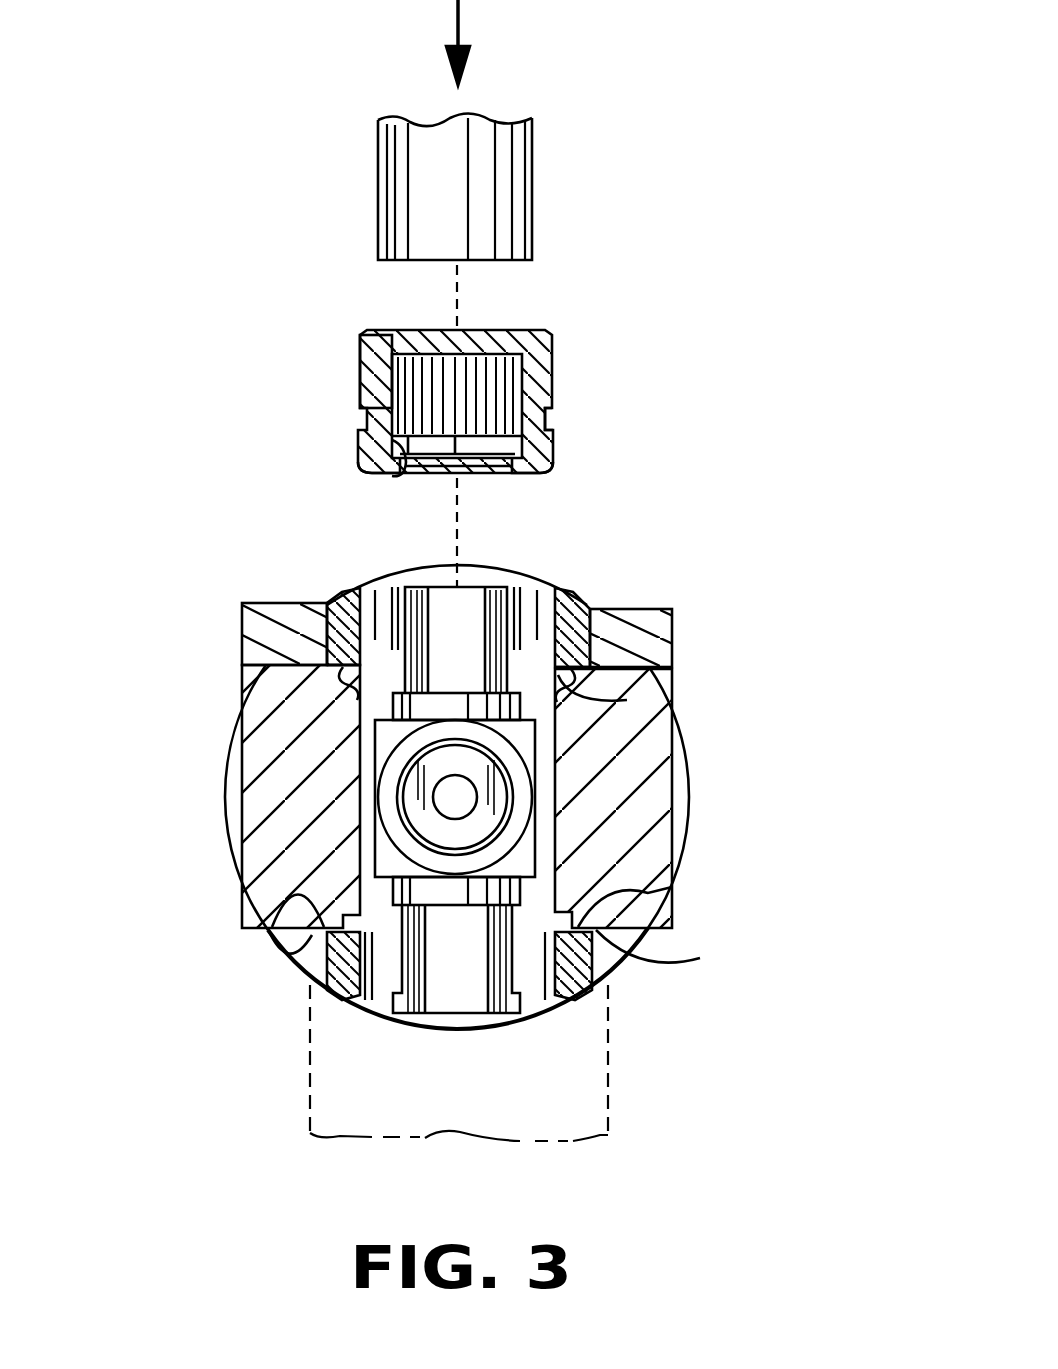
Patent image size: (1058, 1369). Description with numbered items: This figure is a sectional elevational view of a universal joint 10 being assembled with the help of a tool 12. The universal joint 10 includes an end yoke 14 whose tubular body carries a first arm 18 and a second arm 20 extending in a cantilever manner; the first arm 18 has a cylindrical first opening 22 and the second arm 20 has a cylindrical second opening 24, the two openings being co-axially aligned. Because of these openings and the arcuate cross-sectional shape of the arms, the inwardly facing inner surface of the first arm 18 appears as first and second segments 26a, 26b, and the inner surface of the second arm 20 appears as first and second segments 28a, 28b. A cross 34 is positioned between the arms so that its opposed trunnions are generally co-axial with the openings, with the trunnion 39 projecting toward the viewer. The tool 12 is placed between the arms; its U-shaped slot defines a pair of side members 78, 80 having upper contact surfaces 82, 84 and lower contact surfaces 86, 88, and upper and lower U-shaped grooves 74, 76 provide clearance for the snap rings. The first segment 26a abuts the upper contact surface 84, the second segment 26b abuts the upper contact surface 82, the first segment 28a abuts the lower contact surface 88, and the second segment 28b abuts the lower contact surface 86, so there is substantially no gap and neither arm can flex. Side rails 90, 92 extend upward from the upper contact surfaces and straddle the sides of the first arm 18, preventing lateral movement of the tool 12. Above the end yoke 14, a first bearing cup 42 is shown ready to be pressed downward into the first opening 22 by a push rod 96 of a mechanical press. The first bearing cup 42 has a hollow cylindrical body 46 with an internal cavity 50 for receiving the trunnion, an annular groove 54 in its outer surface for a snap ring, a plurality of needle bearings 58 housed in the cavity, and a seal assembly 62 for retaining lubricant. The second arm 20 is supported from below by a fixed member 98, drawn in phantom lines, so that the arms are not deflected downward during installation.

The universal joint 10 is at (824, 428).
The tool 12 is at (472, 791).
The end yoke 14 is at (296, 975).
The first arm 18 is at (572, 600).
The second arm 20 is at (610, 1017).
The first opening 22 is at (383, 612).
The second opening 24 is at (372, 1000).
The first segment of inner surface 26a is at (355, 700).
The second segment of inner surface 26b is at (672, 688).
The first segment of inner surface 28a is at (297, 895).
The second segment of inner surface 28b is at (672, 887).
The cross 34 is at (465, 798).
The trunnion 39 is at (382, 773).
The first bearing cup 42 is at (467, 377).
The hollow cylindrical body 46 is at (360, 362).
The internal cavity 50 is at (398, 470).
The annular groove 54 is at (553, 416).
The needle bearings 58 is at (478, 358).
The seal assembly 62 is at (545, 470).
The upper U-shaped groove 74 is at (523, 620).
The lower U-shaped groove 76 is at (522, 1000).
The side member 78 is at (679, 745).
The side member 80 is at (240, 822).
The upper contact surface 82 is at (585, 620).
The upper contact surface 84 is at (362, 660).
The lower contact surface 86 is at (640, 948).
The lower contact surface 88 is at (283, 952).
The side rail 90 is at (672, 637).
The side rail 92 is at (242, 625).
The push rod 96 is at (532, 177).
The fixed member 98 is at (610, 1108).